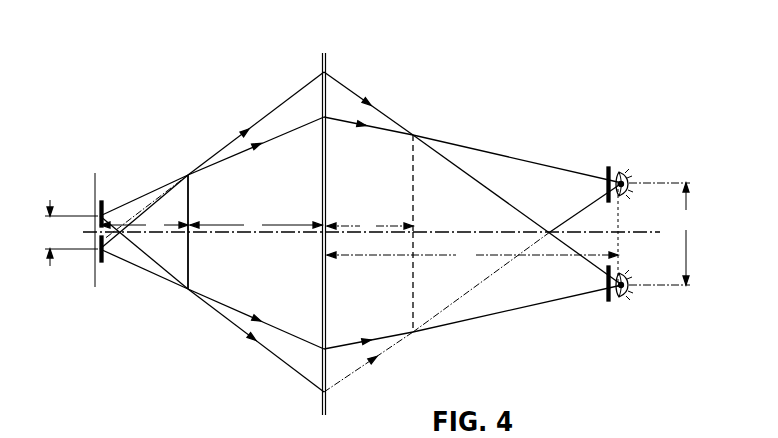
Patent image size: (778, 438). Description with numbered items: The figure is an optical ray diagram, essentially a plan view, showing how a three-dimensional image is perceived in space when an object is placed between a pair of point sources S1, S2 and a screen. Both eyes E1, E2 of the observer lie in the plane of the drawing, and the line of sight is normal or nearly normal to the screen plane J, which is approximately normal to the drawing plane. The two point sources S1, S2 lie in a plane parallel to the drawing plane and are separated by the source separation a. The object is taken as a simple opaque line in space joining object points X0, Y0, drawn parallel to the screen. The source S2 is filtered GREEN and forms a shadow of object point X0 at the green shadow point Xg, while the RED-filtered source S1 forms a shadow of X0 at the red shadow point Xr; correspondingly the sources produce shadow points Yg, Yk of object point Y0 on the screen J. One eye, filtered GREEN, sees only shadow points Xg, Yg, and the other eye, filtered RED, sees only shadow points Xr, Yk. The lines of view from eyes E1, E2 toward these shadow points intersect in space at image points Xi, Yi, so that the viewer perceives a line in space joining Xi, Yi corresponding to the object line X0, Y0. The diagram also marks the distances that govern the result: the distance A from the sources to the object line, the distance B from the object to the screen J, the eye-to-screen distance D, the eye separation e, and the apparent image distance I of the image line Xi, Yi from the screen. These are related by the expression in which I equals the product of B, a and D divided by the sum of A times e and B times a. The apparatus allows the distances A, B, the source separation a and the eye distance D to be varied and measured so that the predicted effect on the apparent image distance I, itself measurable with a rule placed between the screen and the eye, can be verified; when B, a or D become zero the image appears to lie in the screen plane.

The point source S1 is at (96, 250).
The point source S2 is at (96, 215).
The green filter GREEN is at (101, 201).
The red filter RED is at (101, 262).
The source separation a is at (69, 233).
The source-to-object distance A is at (144, 226).
The object-to-screen distance B is at (256, 226).
The apparent image distance I is at (370, 227).
The eye-to-screen distance D is at (472, 256).
The eye separation e is at (659, 234).
The object point X0 is at (201, 203).
The object point Y0 is at (198, 261).
The screen plane J is at (318, 235).
The red shadow point Xr is at (267, 119).
The green shadow point Xg is at (267, 146).
The red shadow point Yk is at (266, 319).
The green shadow point Yg is at (300, 351).
The image point Xi is at (374, 152).
The image point Yi is at (372, 292).
The eye E1 is at (633, 293).
The eye E2 is at (633, 179).